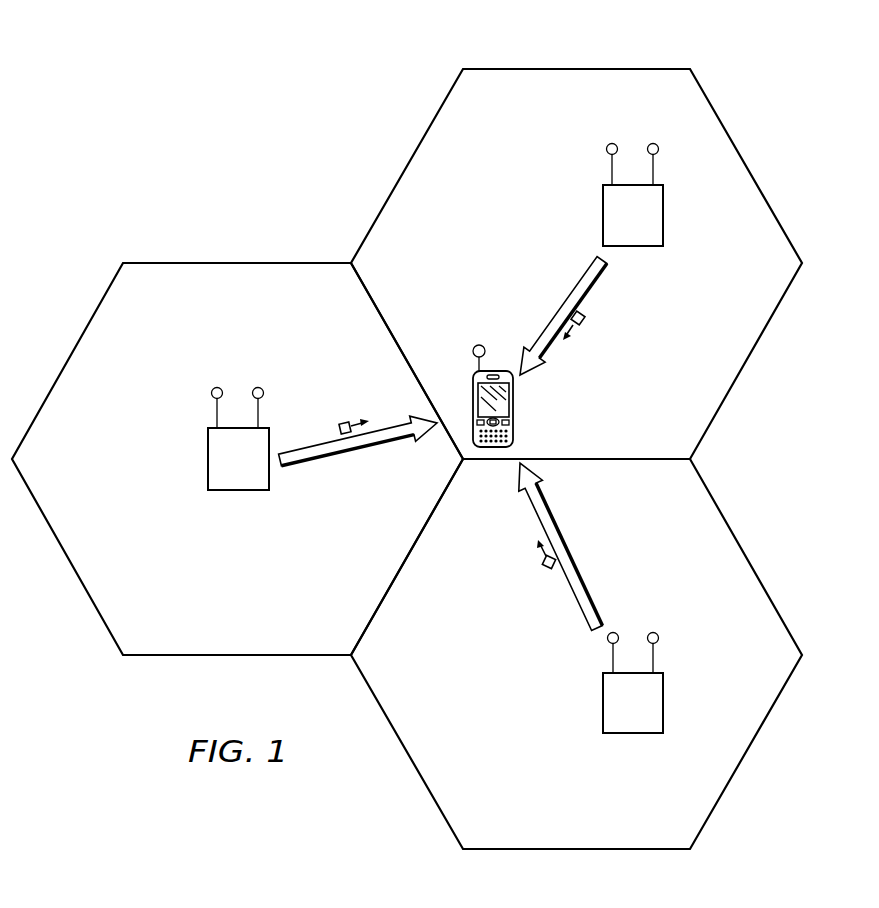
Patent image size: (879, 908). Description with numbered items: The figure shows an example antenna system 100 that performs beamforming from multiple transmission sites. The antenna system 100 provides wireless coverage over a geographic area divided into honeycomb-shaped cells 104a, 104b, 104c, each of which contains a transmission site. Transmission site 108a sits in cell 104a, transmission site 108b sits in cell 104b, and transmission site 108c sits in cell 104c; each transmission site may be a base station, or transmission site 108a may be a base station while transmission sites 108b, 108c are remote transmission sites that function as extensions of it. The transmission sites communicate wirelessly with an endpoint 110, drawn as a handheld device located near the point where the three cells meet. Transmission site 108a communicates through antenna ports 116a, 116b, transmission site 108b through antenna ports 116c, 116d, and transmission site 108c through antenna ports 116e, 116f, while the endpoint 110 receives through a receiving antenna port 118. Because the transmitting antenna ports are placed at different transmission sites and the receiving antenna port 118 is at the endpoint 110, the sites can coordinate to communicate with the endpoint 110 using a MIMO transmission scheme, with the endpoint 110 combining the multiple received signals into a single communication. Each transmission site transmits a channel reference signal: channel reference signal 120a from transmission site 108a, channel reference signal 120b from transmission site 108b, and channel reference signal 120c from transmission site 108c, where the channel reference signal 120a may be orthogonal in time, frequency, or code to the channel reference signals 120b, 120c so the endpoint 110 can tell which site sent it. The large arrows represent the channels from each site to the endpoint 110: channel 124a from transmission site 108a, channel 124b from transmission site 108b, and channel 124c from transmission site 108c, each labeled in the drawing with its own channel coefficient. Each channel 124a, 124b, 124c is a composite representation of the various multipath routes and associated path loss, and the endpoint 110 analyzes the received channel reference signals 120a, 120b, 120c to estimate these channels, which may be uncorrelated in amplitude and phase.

The antenna system 100 is at (210, 59).
The cell 104a is at (779, 142).
The cell 104b is at (779, 533).
The cell 104c is at (234, 255).
The transmission site 108a is at (665, 222).
The transmission site 108b is at (602, 702).
The transmission site 108c is at (206, 461).
The endpoint 110 is at (515, 403).
The antenna port 116a is at (610, 143).
The antenna port 116b is at (655, 143).
The antenna port 116c is at (618, 633).
The antenna port 116d is at (659, 639).
The antenna port 116e is at (216, 387).
The antenna port 116f is at (259, 387).
The receiving antenna port 118 is at (474, 346).
The channel reference signal 120a is at (585, 323).
The channel reference signal 120b is at (545, 566).
The channel reference signal 120c is at (344, 422).
The channel 124a is at (562, 302).
The channel 124b is at (568, 546).
The channel 124c is at (350, 452).